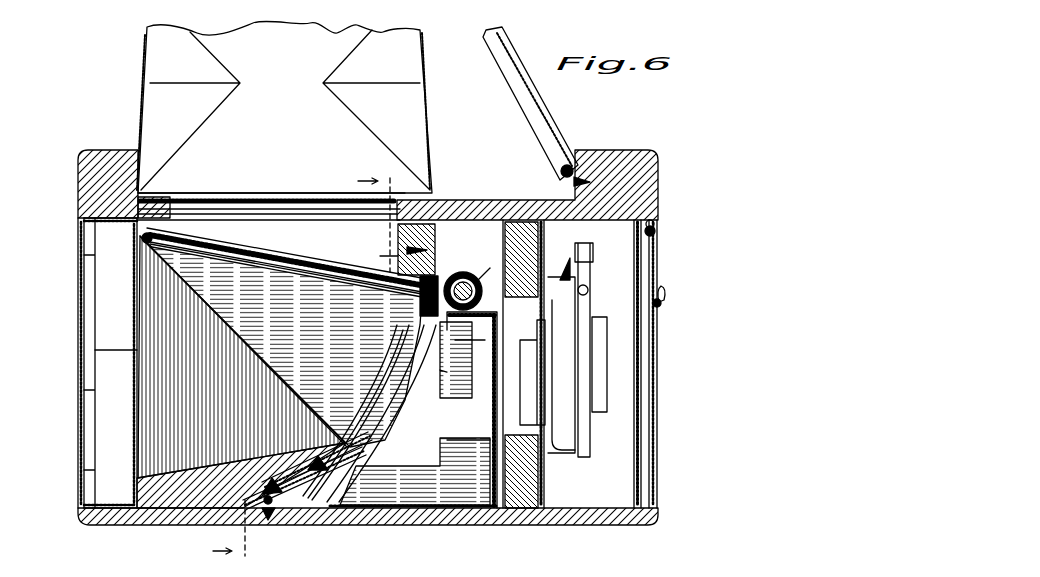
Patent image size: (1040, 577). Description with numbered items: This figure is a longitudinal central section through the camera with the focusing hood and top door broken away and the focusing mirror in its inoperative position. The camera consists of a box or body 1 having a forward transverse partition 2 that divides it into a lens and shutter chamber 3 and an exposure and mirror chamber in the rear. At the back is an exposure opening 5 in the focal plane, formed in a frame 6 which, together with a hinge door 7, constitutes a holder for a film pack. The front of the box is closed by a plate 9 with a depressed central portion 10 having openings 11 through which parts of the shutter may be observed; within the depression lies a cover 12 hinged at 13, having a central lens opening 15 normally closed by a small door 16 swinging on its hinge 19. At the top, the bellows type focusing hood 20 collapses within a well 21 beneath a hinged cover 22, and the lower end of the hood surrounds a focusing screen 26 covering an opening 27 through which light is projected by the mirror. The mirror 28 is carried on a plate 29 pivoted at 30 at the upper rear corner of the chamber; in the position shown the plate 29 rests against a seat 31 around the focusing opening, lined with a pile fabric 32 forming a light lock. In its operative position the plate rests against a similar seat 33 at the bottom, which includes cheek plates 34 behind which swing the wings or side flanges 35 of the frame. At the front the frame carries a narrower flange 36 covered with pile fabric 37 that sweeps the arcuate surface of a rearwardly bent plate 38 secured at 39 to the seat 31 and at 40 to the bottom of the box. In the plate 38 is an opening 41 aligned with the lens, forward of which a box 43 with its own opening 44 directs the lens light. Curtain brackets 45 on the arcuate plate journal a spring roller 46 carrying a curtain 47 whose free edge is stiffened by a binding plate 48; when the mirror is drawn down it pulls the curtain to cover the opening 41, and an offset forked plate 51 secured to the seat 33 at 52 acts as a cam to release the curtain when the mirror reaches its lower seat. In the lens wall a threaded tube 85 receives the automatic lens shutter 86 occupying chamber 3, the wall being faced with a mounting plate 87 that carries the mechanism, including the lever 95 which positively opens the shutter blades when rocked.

The box or body 1 is at (385, 325).
The forward transverse partition 2 is at (530, 245).
The lens and shutter chamber 3 is at (581, 351).
The exposure opening 5 is at (133, 405).
The frame 6 is at (252, 279).
The hinge door 7 is at (78, 290).
The plate 9 is at (653, 222).
The depressed central portion 10 is at (632, 312).
The openings 11 is at (320, 365).
The cover 12 is at (655, 450).
The hinge 13 is at (656, 233).
The central lens opening 15 is at (650, 360).
The small door 16 is at (666, 291).
The hinge 19 is at (660, 305).
The focusing hood 20 is at (432, 122).
The well 21 is at (527, 185).
The hinged cover 22 is at (512, 48).
The focusing screen 26 is at (296, 195).
The opening 27 is at (358, 212).
The mirror 28 is at (284, 260).
The plate 29 is at (340, 286).
The pivot 30 is at (130, 236).
The seat 31 is at (380, 256).
The pile fabric 32 is at (462, 270).
The seat 33 is at (178, 516).
The cheek plates 34 is at (241, 357).
The wings or side flanges 35 is at (281, 341).
The flange 36 is at (420, 306).
The pile fabric 37 is at (424, 322).
The rearwardly bent plate 38 is at (355, 470).
The securing point 39 is at (436, 216).
The securing point 40 is at (272, 522).
The opening 41 is at (416, 408).
The box 43 is at (468, 438).
The opening 44 is at (496, 400).
The curtain brackets 45 is at (489, 263).
The spring roller 46 is at (468, 410).
The curtain 47 is at (470, 351).
The binding plate 48 is at (440, 372).
The offset forked plate 51 is at (365, 414).
The securing point 52 is at (272, 470).
The threaded tube 85 is at (522, 400).
The automatic lens shutter 86 is at (593, 400).
The mounting plate 87 is at (545, 492).
The lever 95 is at (566, 440).